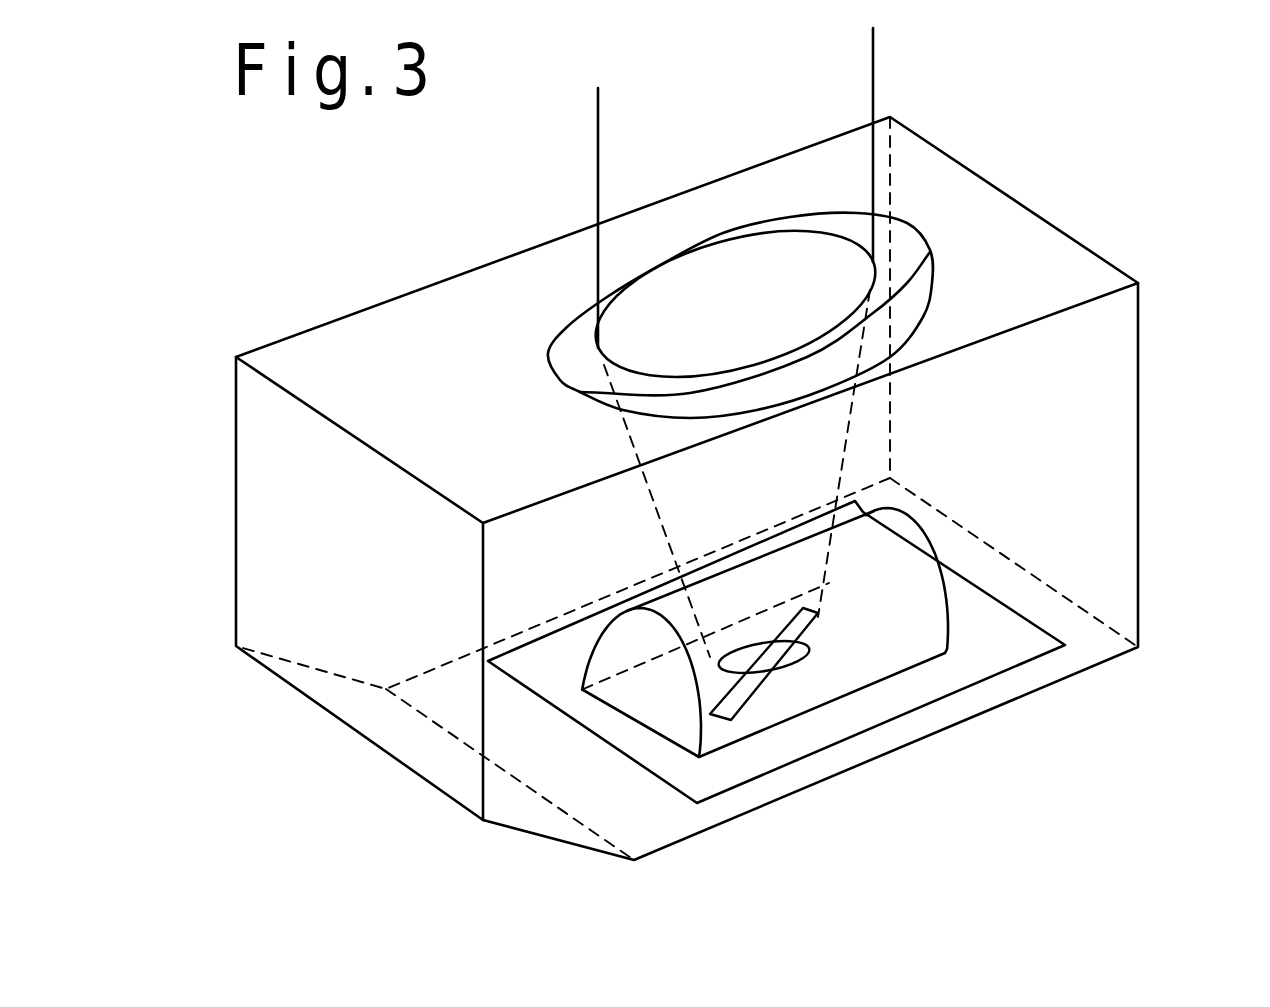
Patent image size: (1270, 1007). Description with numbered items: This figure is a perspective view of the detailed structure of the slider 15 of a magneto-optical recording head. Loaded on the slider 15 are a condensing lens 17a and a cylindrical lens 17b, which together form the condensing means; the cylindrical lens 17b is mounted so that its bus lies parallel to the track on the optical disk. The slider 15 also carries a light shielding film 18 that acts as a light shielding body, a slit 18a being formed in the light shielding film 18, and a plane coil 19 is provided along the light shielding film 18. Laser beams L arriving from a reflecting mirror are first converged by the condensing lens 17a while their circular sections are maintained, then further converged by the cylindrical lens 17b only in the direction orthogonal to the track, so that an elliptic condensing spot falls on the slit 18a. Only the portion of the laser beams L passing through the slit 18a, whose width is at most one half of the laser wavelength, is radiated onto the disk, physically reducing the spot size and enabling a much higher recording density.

The slider 15 is at (1017, 223).
The condensing lens 17a is at (907, 253).
The cylindrical lens 17b is at (933, 517).
The laser beams L is at (828, 95).
The light shielding film 18 is at (883, 643).
The slit 18a is at (750, 690).
The plane coil 19 is at (818, 723).